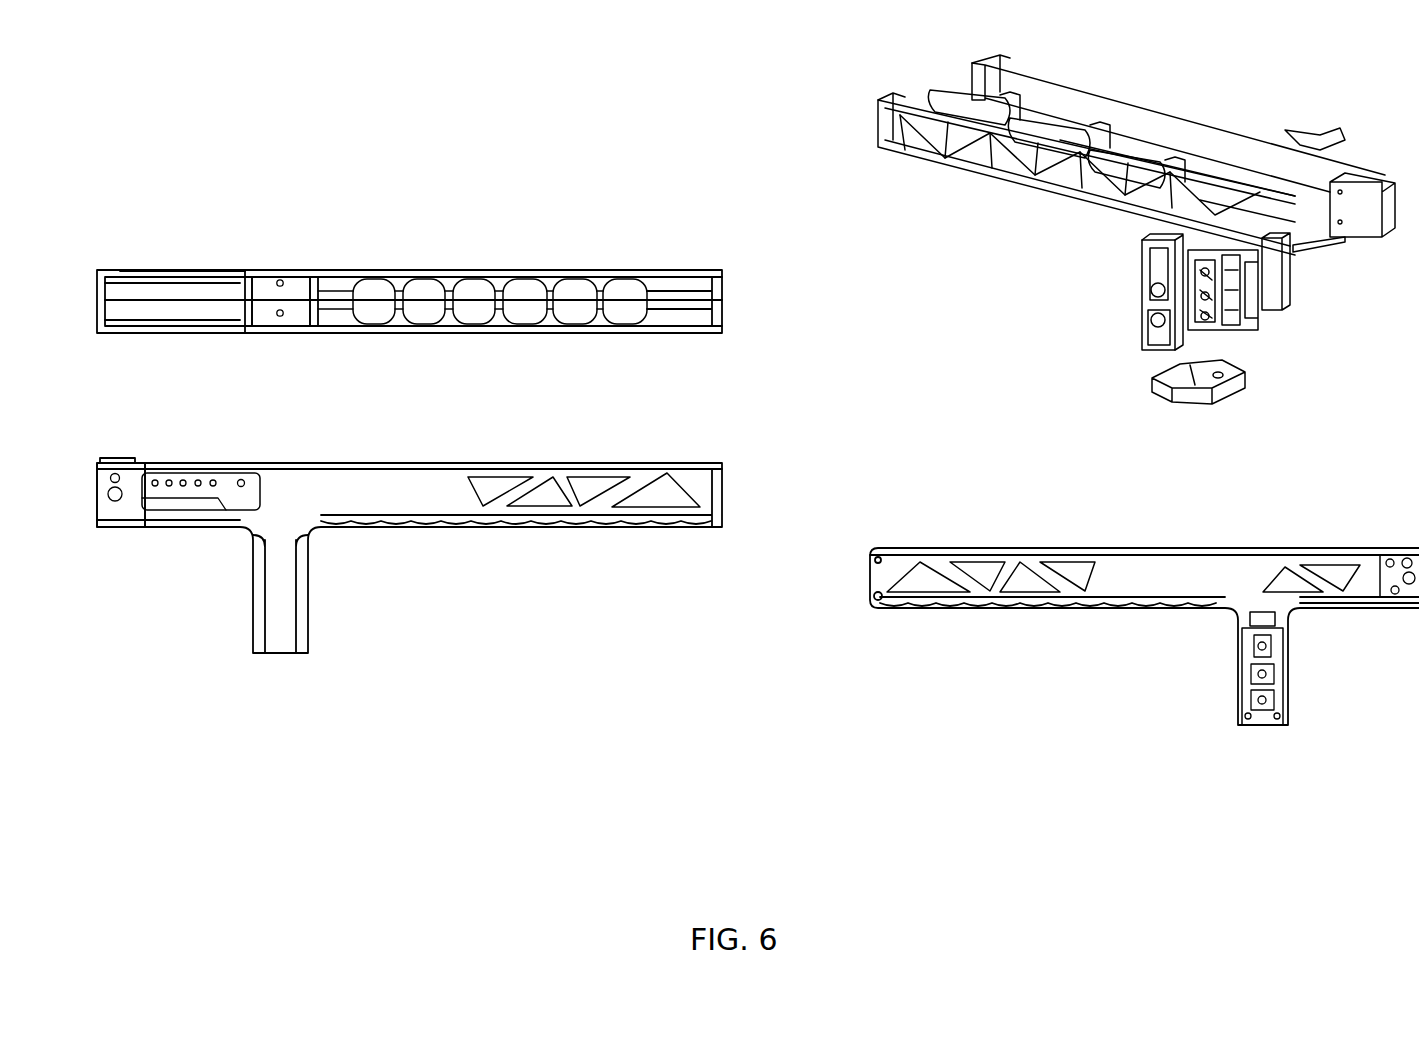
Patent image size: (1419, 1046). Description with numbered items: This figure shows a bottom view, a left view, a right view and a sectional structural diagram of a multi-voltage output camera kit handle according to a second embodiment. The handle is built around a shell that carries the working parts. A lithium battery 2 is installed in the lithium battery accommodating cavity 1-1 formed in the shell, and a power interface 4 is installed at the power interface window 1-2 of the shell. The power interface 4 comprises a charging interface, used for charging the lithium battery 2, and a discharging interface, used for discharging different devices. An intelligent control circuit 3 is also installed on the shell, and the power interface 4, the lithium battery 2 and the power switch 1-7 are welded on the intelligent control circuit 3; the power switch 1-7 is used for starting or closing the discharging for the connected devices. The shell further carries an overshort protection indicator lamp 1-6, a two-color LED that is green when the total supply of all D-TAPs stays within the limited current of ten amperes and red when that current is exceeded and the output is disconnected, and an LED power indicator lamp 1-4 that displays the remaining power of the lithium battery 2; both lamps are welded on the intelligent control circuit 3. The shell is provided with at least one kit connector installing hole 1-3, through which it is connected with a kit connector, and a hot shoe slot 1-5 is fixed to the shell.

The lithium battery 2 is at (1152, 165).
The lithium battery accommodating cavity 1-1 is at (1338, 220).
The intelligent control circuit 3 is at (1230, 307).
The power interface 4 is at (1213, 313).
The kit connector installing hole 1-3 is at (283, 311).
The power switch 1-7 is at (255, 472).
The LED power indicator lamp 1-4 is at (155, 482).
The hot shoe slot 1-5 is at (1395, 550).
The overshort protection indicator lamp 1-6 is at (1277, 686).
The power interface window 1-2 is at (1283, 698).